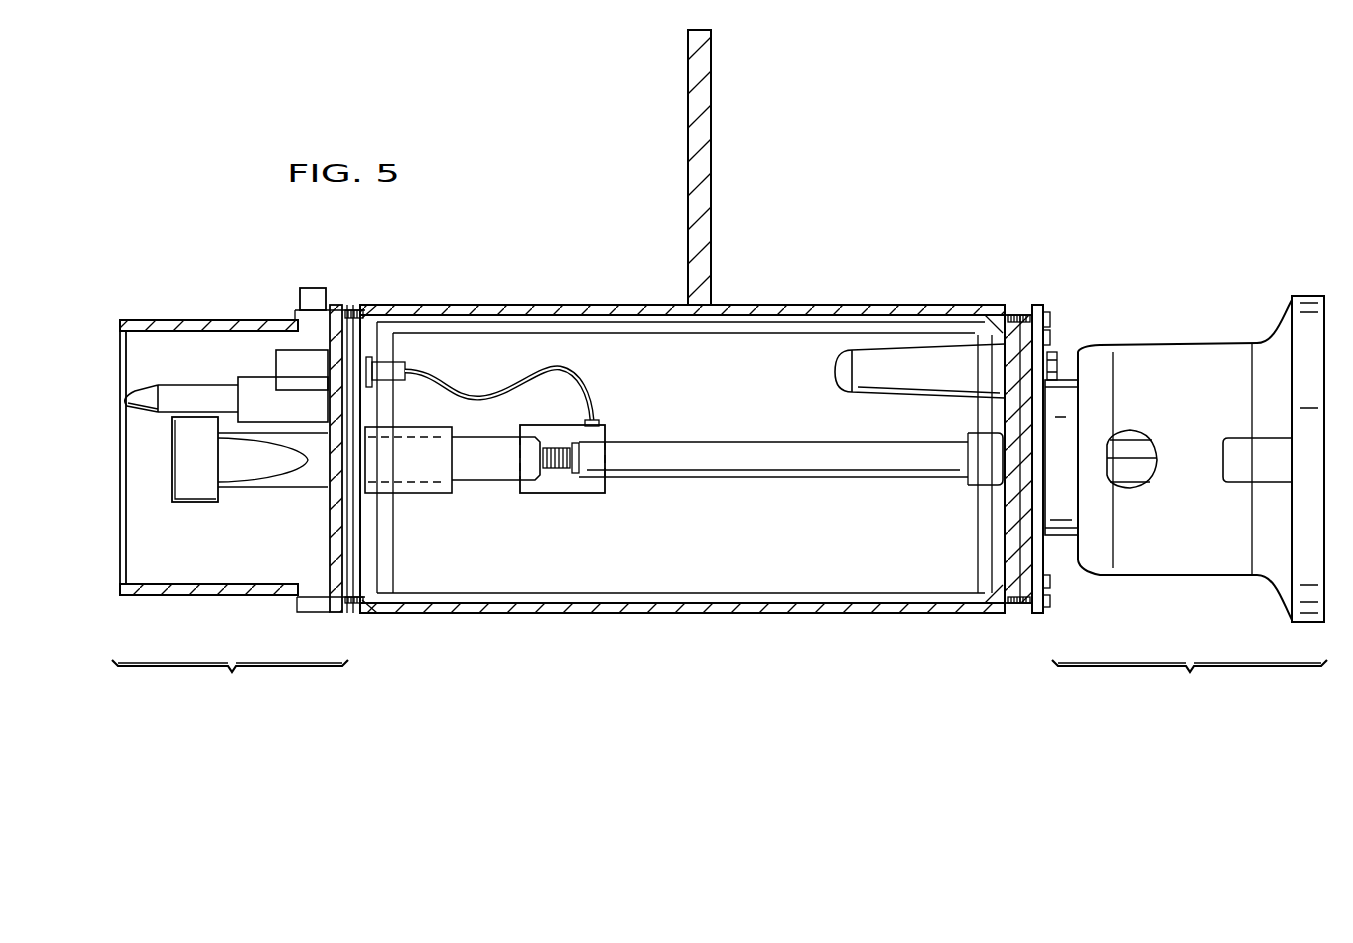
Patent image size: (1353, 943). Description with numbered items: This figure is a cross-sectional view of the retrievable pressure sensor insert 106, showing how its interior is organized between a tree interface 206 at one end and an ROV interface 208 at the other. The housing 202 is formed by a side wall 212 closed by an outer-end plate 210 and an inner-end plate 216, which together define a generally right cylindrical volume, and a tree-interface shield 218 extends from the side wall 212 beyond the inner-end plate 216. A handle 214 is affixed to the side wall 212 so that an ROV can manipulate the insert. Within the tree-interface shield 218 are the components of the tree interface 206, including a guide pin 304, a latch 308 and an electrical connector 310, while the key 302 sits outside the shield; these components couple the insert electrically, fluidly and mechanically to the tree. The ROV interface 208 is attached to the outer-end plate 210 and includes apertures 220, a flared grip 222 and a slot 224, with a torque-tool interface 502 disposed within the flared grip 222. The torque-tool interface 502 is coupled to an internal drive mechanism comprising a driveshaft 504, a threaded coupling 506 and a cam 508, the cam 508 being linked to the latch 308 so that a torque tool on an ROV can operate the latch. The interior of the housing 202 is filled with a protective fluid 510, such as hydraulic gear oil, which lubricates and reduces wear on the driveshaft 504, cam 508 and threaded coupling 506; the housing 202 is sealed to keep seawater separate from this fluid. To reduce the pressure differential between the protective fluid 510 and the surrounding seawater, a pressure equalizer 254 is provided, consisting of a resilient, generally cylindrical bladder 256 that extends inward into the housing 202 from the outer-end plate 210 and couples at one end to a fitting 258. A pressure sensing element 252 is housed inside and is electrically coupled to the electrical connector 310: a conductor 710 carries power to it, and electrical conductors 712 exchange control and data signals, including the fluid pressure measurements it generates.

The retrievable pressure sensor insert 106 is at (988, 140).
The housing 202 is at (849, 303).
The tree interface 206 is at (230, 683).
The ROV interface 208 is at (1189, 683).
The outer-end plate 210 is at (1035, 305).
The side wall 212 is at (522, 305).
The handle 214 is at (688, 92).
The inner-end plate 216 is at (340, 310).
The tree-interface shield 218 is at (190, 597).
The apertures 220 is at (1133, 490).
The flared grip 222 is at (1310, 296).
The slot 224 is at (1226, 480).
The pressure sensing element 252 is at (580, 495).
The pressure equalizer 254 is at (818, 347).
The bladder 256 is at (836, 380).
The fitting 258 is at (1058, 352).
The key 302 is at (312, 288).
The guide pin 304 is at (138, 385).
The latch 308 is at (197, 503).
The electrical connector 310 is at (270, 365).
The torque-tool interface 502 is at (1145, 450).
The driveshaft 504 is at (887, 478).
The threaded coupling 506 is at (565, 472).
The cam 508 is at (497, 483).
The protective fluid 510 is at (677, 537).
The conductor 710 is at (588, 405).
The electrical conductors 712 is at (385, 372).